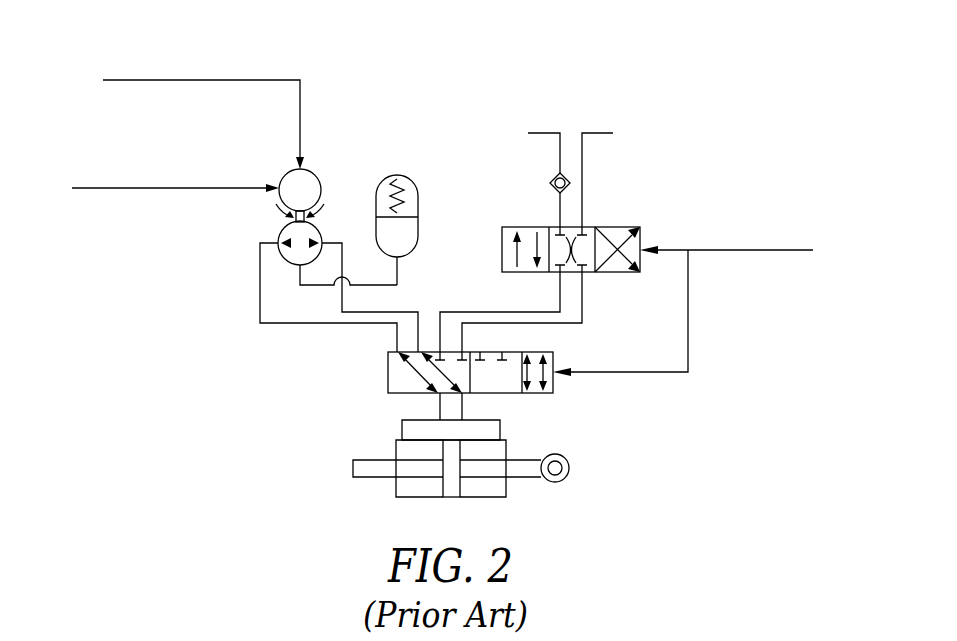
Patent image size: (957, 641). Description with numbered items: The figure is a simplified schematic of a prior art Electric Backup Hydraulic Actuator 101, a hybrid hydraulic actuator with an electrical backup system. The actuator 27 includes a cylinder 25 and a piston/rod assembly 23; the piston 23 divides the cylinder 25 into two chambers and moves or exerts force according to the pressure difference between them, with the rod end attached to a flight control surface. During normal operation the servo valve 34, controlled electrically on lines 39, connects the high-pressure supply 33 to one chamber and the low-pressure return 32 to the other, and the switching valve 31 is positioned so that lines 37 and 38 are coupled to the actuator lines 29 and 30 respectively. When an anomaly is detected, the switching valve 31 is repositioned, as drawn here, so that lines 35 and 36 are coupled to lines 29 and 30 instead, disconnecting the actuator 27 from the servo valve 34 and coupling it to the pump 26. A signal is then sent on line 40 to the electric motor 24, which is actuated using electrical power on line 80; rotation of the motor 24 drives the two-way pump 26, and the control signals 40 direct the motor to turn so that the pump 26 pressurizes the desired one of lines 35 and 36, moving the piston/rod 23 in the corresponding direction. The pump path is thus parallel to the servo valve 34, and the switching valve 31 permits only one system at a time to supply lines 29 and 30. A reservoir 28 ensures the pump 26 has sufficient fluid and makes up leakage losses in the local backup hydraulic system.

The Electric Backup Hydraulic Actuator 101 is at (738, 60).
The electrical control line 40 is at (142, 80).
The electrical power line 80 is at (123, 188).
The electric motor 24 is at (312, 172).
The pump 26 is at (313, 226).
The reservoir 28 is at (410, 180).
The pump line 35 is at (280, 323).
The pump line 36 is at (397, 312).
The servo valve line 37 is at (537, 312).
The servo valve line 38 is at (583, 294).
The supply 33 is at (540, 132).
The return 32 is at (603, 132).
The servo valve 34 is at (630, 227).
The servo valve control lines 39 is at (773, 250).
The switching valve 31 is at (557, 358).
The actuator 27 is at (522, 512).
The actuator line 29 is at (402, 432).
The actuator line 30 is at (500, 430).
The cylinder 25 is at (408, 497).
The piston/rod assembly 23 is at (520, 465).